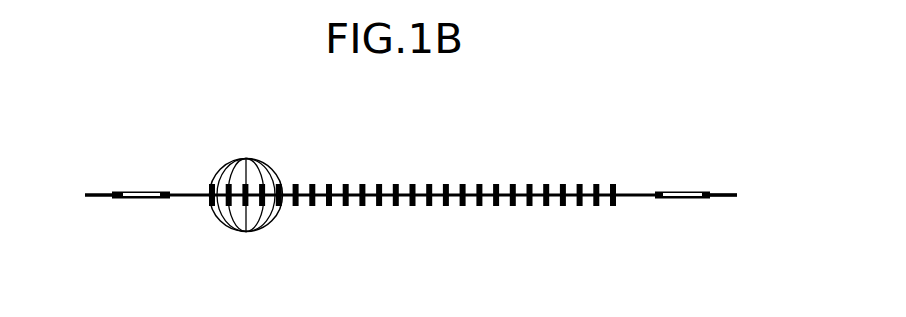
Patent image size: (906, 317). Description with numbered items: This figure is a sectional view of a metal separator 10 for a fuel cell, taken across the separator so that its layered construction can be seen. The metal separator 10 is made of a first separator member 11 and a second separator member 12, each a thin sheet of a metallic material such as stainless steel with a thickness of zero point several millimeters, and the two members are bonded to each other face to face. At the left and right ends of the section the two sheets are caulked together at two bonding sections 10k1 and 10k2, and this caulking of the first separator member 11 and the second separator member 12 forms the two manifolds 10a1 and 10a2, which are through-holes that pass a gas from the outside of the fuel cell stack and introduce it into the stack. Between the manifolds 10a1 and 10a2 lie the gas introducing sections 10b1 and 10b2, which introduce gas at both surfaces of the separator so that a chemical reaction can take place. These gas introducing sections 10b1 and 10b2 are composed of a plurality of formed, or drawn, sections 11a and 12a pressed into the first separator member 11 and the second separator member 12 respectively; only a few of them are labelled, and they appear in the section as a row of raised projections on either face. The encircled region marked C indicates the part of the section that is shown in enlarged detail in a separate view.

The metal separator 10 is at (578, 158).
The C section C is at (152, 147).
The manifold 10a1 is at (124, 199).
The manifold 10a2 is at (697, 199).
The bonding section 10k1 is at (138, 185).
The bonding section 10k2 is at (677, 182).
The gas introducing section 10b1 is at (360, 213).
The gas introducing section 10b2 is at (361, 172).
The first separator member 11 is at (718, 197).
The second separator member 12 is at (718, 193).
The formed section 11a is at (246, 209).
The formed section 12a is at (246, 182).